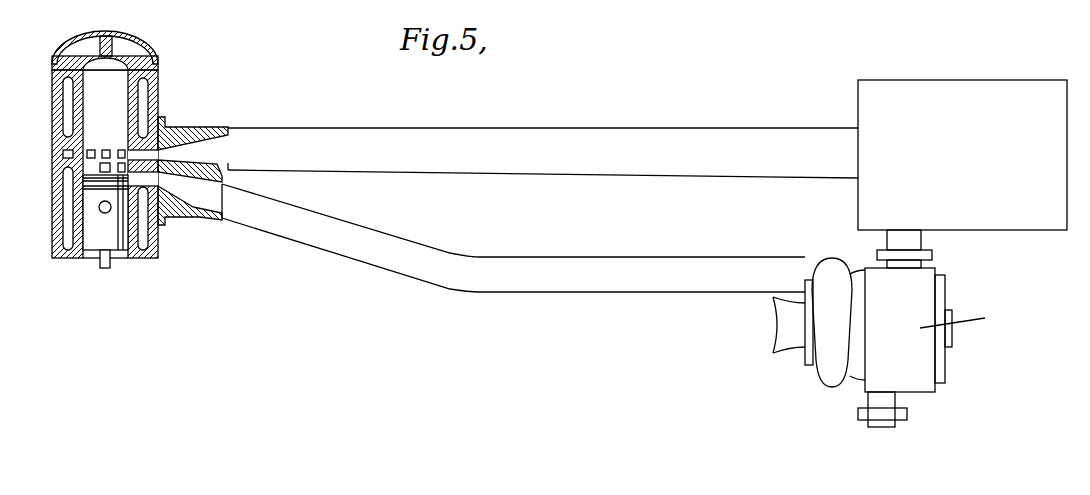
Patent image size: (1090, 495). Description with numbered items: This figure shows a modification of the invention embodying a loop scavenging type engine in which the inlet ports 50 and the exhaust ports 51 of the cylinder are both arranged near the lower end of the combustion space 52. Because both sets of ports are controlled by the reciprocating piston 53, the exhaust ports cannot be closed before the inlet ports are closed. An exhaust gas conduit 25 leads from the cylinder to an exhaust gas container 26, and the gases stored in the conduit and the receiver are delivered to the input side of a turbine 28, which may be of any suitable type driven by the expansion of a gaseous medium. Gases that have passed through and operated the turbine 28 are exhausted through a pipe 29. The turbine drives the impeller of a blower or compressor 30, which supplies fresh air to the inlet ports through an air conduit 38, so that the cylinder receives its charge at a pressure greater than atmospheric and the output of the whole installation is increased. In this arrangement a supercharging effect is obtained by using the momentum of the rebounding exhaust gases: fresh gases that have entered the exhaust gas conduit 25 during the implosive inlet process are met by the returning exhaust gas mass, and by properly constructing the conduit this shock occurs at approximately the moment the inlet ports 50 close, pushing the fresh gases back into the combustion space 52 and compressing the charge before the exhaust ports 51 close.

The exhaust gas conduit 25 is at (405, 128).
The exhaust gas container 26 is at (876, 108).
The turbine 28 is at (928, 311).
The pipe 29 is at (895, 422).
The blower or compressor 30 is at (833, 355).
The air conduit 38 is at (435, 258).
The inlet ports 50 is at (100, 170).
The exhaust ports 51 is at (70, 153).
The combustion space 52 is at (93, 110).
The reciprocating piston 53 is at (120, 232).